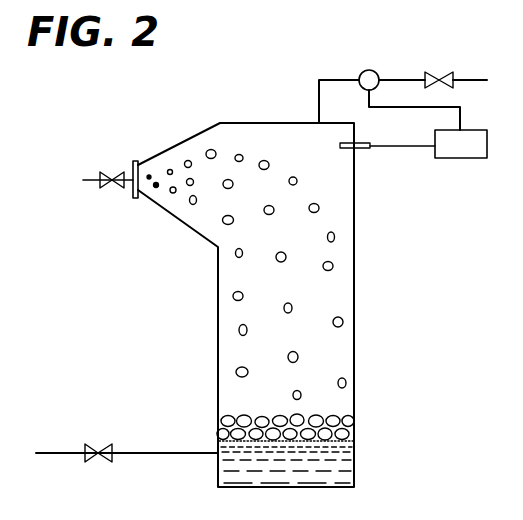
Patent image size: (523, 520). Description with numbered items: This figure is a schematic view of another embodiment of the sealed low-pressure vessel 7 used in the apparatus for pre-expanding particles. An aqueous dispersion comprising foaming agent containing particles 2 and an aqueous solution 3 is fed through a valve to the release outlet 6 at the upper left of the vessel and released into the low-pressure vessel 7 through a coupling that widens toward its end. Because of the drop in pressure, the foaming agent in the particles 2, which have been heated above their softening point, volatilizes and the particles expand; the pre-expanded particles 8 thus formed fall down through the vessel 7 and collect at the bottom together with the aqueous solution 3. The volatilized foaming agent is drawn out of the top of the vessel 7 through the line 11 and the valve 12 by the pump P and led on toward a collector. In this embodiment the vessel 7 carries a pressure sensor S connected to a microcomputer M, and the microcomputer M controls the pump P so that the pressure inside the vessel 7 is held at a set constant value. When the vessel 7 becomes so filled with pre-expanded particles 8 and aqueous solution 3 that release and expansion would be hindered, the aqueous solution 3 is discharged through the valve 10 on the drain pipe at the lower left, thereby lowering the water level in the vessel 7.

The foaming agent containing particles 2 is at (144, 214).
The aqueous solution 3 is at (320, 457).
The release outlet 6 is at (107, 219).
The low-pressure vessel 7 is at (281, 305).
The pre-expanded particles 8 is at (247, 295).
The valve 10 is at (127, 417).
The line 11 is at (297, 97).
The valve 12 is at (438, 54).
The pump P is at (409, 75).
The pressure sensor S is at (387, 189).
The microcomputer M is at (461, 182).